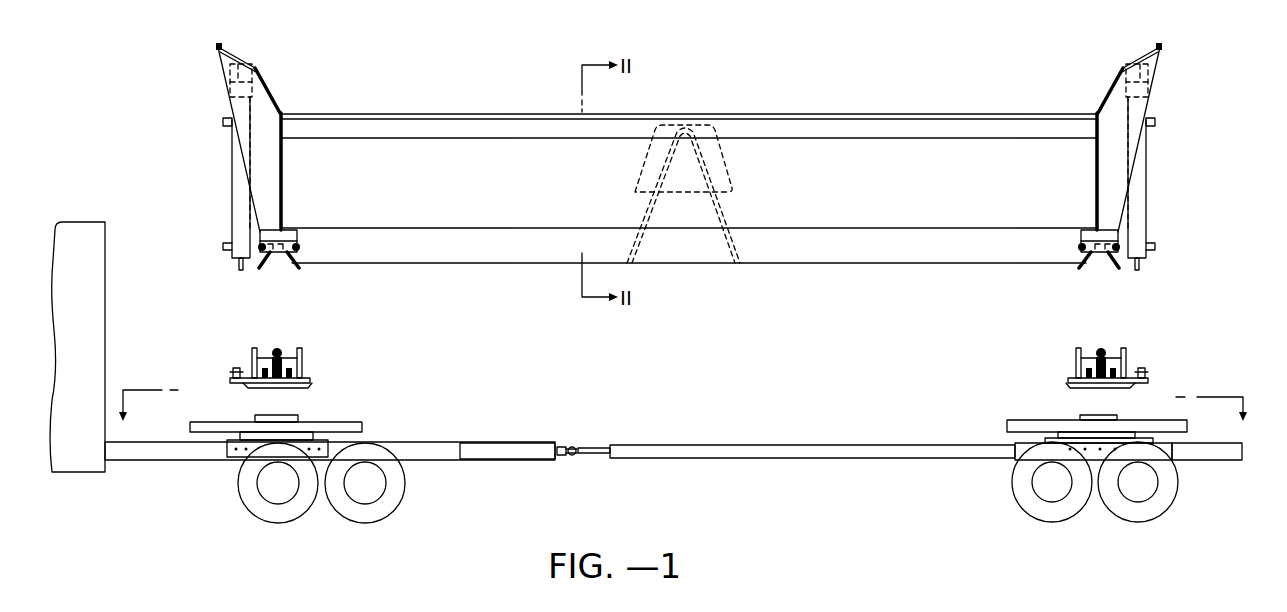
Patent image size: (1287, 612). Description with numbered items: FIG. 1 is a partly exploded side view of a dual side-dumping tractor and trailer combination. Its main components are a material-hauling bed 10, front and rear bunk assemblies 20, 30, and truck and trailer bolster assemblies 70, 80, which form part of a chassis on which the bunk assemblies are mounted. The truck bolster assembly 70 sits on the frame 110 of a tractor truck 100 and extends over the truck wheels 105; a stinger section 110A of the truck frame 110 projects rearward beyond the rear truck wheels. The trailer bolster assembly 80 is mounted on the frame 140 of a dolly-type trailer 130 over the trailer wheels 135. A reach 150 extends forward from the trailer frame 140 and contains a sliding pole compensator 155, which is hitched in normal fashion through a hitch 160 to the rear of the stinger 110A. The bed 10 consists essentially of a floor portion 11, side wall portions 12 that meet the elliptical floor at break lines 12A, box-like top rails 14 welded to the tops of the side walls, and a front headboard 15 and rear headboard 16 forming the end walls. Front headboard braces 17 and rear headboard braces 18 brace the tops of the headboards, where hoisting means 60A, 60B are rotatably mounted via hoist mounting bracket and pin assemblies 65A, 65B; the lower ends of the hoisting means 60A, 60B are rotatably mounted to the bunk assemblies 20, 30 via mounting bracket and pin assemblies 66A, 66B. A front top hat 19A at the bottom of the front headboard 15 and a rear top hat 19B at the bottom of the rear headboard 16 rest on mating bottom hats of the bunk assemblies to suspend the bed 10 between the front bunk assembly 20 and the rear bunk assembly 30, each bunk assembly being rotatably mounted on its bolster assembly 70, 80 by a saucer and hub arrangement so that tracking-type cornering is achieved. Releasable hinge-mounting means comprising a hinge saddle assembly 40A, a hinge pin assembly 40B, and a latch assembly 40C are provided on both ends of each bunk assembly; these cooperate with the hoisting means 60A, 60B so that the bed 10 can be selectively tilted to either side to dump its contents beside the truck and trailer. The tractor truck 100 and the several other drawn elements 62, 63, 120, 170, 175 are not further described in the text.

The material-hauling bed 10 is at (689, 185).
The floor portion 11 is at (485, 252).
The side wall portion 12 is at (470, 152).
The break line 12A is at (947, 228).
The top rails 14 is at (346, 128).
The front headboard 15 is at (237, 58).
The rear headboard 16 is at (1133, 60).
The front headboard braces 17 is at (262, 112).
The rear headboard braces 18 is at (1128, 142).
The front top hat 19A is at (268, 266).
The rear top hat 19B is at (1110, 266).
The front bunk assembly 20 is at (277, 360).
The rear bunk assembly 30 is at (1087, 354).
The hinge saddle assembly 40A is at (305, 364).
The hinge pin assembly 40B is at (297, 234).
The latch assembly 40C is at (280, 388).
The front hoisting means 60A is at (232, 180).
The rear hoisting means 60B is at (1146, 183).
The lower bracket 62 is at (227, 243).
The upper bracket 63 is at (224, 122).
The front hoist mounting bracket and pin assembly 65A is at (226, 72).
The rear hoist mounting bracket and pin assembly 65B is at (1140, 70).
The front mounting bracket and pin assembly 66A is at (235, 372).
The rear mounting bracket and pin assembly 66B is at (1150, 375).
The truck bolster assembly 70 is at (237, 415).
The trailer bolster assembly 80 is at (1058, 415).
The tractor truck 100 is at (668, 482).
The truck wheels 105 is at (286, 521).
The truck frame 110 is at (197, 457).
The stinger section 110A is at (514, 455).
The tractor 120 is at (97, 224).
The dolly-type trailer 130 is at (1195, 470).
The trailer wheels 135 is at (1040, 512).
The trailer frame 140 is at (1092, 461).
The reach 150 is at (683, 461).
The sliding pole compensator 155 is at (590, 455).
The hitch 160 is at (573, 457).
The support legs 170 is at (725, 211).
The housing 175 is at (725, 158).